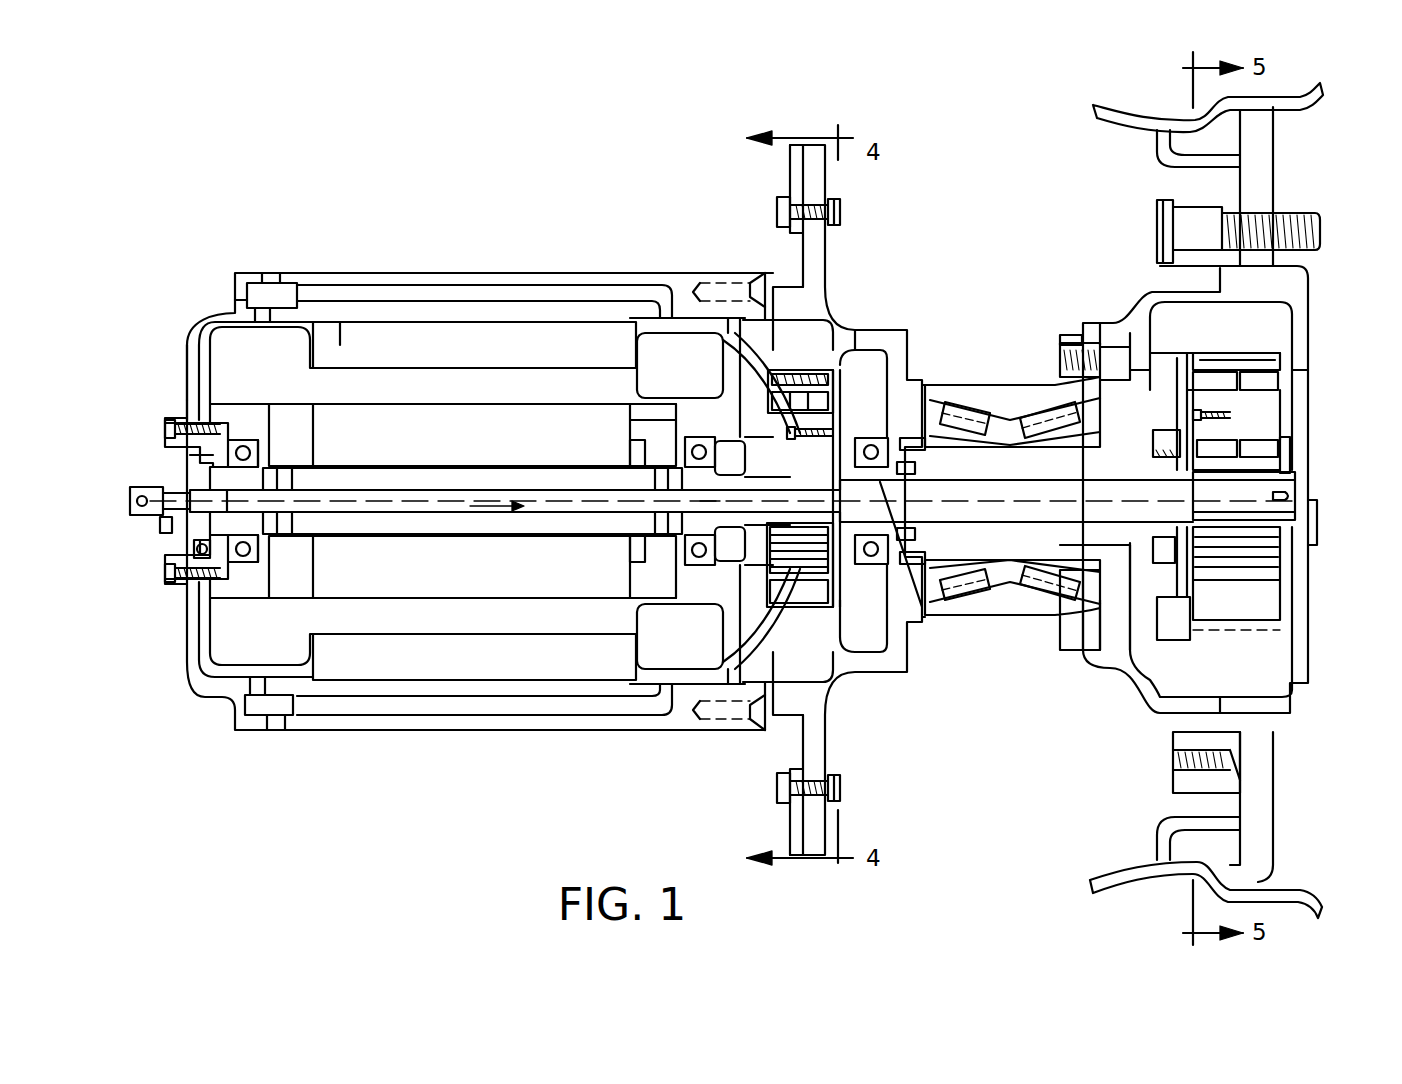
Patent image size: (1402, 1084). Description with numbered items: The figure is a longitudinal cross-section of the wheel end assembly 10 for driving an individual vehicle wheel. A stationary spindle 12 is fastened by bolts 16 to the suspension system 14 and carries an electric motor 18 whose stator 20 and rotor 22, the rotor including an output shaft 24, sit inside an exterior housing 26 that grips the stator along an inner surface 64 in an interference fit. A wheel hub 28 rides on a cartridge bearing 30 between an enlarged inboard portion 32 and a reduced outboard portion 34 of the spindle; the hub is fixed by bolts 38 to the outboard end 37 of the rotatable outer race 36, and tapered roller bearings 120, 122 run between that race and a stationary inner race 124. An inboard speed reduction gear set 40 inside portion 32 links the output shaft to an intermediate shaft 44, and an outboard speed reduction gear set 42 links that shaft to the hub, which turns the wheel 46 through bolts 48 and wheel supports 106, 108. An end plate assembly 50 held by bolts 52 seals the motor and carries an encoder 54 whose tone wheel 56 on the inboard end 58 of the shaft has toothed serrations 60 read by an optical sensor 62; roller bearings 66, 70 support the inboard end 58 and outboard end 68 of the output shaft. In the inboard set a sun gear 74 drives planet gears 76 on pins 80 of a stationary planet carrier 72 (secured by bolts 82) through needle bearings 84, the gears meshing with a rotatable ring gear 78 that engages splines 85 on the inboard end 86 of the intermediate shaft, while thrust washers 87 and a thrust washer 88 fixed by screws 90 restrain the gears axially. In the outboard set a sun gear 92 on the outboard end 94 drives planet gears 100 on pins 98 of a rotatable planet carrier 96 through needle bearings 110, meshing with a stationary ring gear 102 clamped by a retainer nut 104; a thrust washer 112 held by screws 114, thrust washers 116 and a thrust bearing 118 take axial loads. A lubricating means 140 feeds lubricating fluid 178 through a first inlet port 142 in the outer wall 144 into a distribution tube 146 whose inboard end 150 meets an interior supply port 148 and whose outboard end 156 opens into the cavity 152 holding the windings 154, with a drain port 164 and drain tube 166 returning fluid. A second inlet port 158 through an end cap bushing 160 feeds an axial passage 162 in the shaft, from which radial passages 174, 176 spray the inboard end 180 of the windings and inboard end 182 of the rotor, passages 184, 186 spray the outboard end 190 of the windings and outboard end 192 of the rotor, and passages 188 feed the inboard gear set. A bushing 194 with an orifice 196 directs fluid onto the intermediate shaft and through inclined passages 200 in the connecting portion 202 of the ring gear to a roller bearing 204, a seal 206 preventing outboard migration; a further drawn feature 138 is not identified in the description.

The wheel end assembly 10 is at (576, 190).
The spindle 12 is at (828, 258).
The suspension system 14 is at (795, 167).
The bolts 16 is at (777, 212).
The electric motor 18 is at (556, 272).
The stator 20 is at (415, 355).
The rotor 22 is at (440, 445).
The output shaft 24 is at (430, 491).
The exterior housing 26 is at (355, 273).
The wheel hub 28 is at (1140, 286).
The wheel hub cartridge bearing 30 is at (951, 389).
The enlarged diameter inboard portion 32 is at (843, 312).
The reduced diameter outboard portion 34 is at (1062, 545).
The outer race 36 is at (1005, 390).
The outboard end 37 is at (1072, 343).
The bolts 38 is at (1063, 366).
The inboard speed reduction gear set 40 is at (782, 370).
The outboard speed reduction gear set 42 is at (1223, 356).
The intermediate shaft 44 is at (1033, 510).
The wheel 46 is at (1117, 108).
The bolts 48 is at (1157, 224).
The end plate assembly 50 is at (178, 415).
The bolts 52 is at (163, 418).
The encoder 54 is at (172, 540).
The tone wheel 56 is at (186, 452).
The inboard end 58 is at (236, 475).
The toothed serrations 60 is at (180, 456).
The optical sensor 62 is at (184, 553).
The radially inner and axially extending surface 64 is at (347, 324).
The roller bearing 66 is at (258, 560).
The outboard end 68 is at (670, 556).
The roller bearing 70 is at (650, 419).
The planet carrier 72 is at (750, 268).
The sun gear 74 is at (660, 516).
The planet gears 76 is at (845, 672).
The ring gear 78 is at (820, 376).
The pins 80 is at (728, 362).
The bolts 82 is at (700, 283).
The needle bearings 84 is at (733, 413).
The splines 85 is at (885, 482).
The inboard end 86 is at (873, 556).
The thrust washers 87 is at (728, 430).
The thrust washer 88 is at (880, 640).
The screws 90 is at (840, 430).
The sun gear 92 is at (1293, 462).
The outboard end 94 is at (1211, 522).
The planet carrier 96 is at (1300, 342).
The pins 98 is at (1296, 410).
The planet gears 100 is at (1282, 558).
The ring gear 102 is at (1163, 357).
The retainer nut 104 is at (1166, 458).
The wheel support 106 is at (1173, 168).
The wheel support 108 is at (1268, 157).
The needle bearings 110 is at (1296, 447).
The thrust washer 112 is at (1190, 597).
The screws 114 is at (1230, 414).
The thrust washers 116 is at (1290, 383).
The thrust bearing 118 is at (1160, 537).
The tapered roller bearing 120 is at (972, 582).
The tapered roller bearing 122 is at (1057, 592).
The inner race 124 is at (972, 442).
The keyway 138 is at (1322, 497).
The lubricating means 140 is at (260, 262).
The first inlet port 142 is at (295, 272).
The radially outer wall 144 is at (460, 273).
The distribution tube 146 is at (583, 290).
The interior supply port 148 is at (245, 312).
The inboard end 150 is at (247, 283).
The cavity 152 is at (205, 332).
The windings 154 is at (237, 370).
The outboard end 156 is at (678, 300).
The second inlet port 158 is at (163, 495).
The end cap bushing 160 is at (160, 519).
The axially extending passage 162 is at (570, 513).
The drain port 164 is at (275, 727).
The drain tube 166 is at (452, 712).
The first plurality of radially extending passages 174 is at (268, 463).
The second plurality of radially extending passages 176 is at (300, 480).
The lubricating fluid 178 is at (490, 513).
The inboard end 180 is at (290, 394).
The inboard end 182 is at (372, 429).
The third plurality of radially extending passages 184 is at (640, 469).
The fourth plurality of radially extending passages 186 is at (640, 450).
The fifth plurality of radially extending passages 188 is at (682, 579).
The outboard end 190 is at (677, 382).
The outboard end 192 is at (624, 447).
The bushing 194 is at (790, 530).
The orifice 196 is at (802, 570).
The inclined passages 200 is at (853, 570).
The connecting portion 202 is at (850, 378).
The roller bearing 204 is at (905, 447).
The seal 206 is at (940, 598).